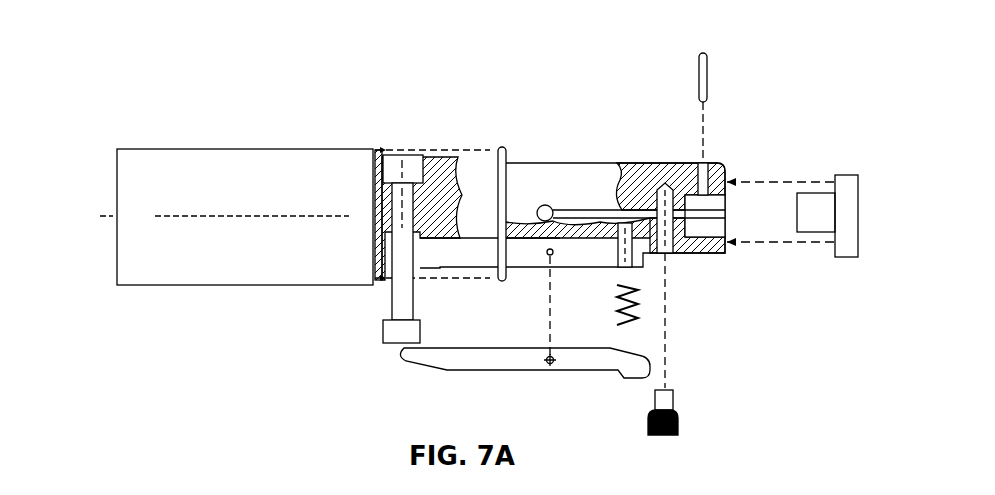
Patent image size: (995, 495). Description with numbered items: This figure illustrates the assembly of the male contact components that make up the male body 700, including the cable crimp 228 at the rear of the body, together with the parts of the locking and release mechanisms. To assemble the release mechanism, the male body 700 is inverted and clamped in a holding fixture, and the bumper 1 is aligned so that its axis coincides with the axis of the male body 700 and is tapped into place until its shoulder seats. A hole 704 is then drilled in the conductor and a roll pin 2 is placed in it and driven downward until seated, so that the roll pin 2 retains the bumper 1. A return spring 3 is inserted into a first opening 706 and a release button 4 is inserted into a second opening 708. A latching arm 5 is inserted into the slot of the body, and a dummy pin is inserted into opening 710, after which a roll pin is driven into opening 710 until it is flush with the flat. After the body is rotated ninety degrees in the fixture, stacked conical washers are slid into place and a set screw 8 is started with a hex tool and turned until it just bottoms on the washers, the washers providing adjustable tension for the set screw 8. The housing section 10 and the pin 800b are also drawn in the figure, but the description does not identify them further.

The male body 700 is at (94, 77).
The cable crimp 228 is at (233, 151).
The valve body 10 is at (357, 148).
The pin 800b is at (502, 147).
The roll pin 2 is at (708, 69).
The hole 704 is at (705, 163).
The first opening 706 is at (670, 256).
The second opening 708 is at (623, 268).
The opening 710 is at (547, 256).
The return spring 3 is at (617, 302).
The latching arm 5 is at (418, 362).
The set screw 8 is at (676, 405).
The release button 4 is at (386, 333).
The bumper 1 is at (860, 212).